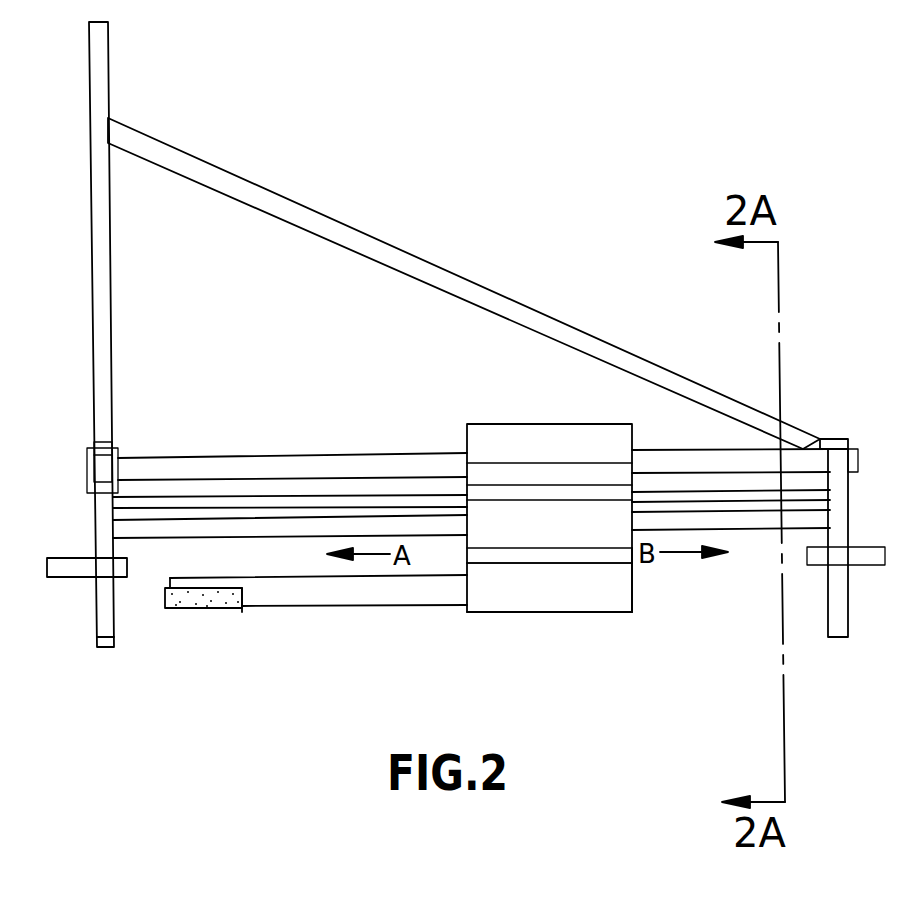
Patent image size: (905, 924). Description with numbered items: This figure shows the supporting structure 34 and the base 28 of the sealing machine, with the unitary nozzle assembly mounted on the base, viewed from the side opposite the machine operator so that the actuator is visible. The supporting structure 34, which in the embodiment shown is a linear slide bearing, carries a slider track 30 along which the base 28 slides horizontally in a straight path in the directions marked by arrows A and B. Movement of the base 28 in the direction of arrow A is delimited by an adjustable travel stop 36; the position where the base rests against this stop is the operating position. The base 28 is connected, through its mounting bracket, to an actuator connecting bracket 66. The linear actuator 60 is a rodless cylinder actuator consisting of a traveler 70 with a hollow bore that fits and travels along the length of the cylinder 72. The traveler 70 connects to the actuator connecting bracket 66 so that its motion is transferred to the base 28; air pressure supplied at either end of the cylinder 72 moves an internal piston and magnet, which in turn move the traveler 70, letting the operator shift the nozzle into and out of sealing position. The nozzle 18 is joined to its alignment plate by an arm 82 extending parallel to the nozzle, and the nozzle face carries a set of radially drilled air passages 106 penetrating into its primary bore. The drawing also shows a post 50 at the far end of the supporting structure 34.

The nozzle 18 is at (242, 612).
The base 28 is at (632, 612).
The slider track 30 is at (733, 512).
The supporting structure 34 is at (520, 240).
The adjustable travel stop 36 is at (55, 580).
The end support post 50 is at (817, 560).
The linear actuator 60 is at (127, 400).
The actuator connecting bracket 66 is at (520, 590).
The traveler 70 is at (593, 422).
The cylinder 72 is at (665, 463).
The arm 82 is at (302, 607).
The radially drilled air passages 106 is at (195, 598).